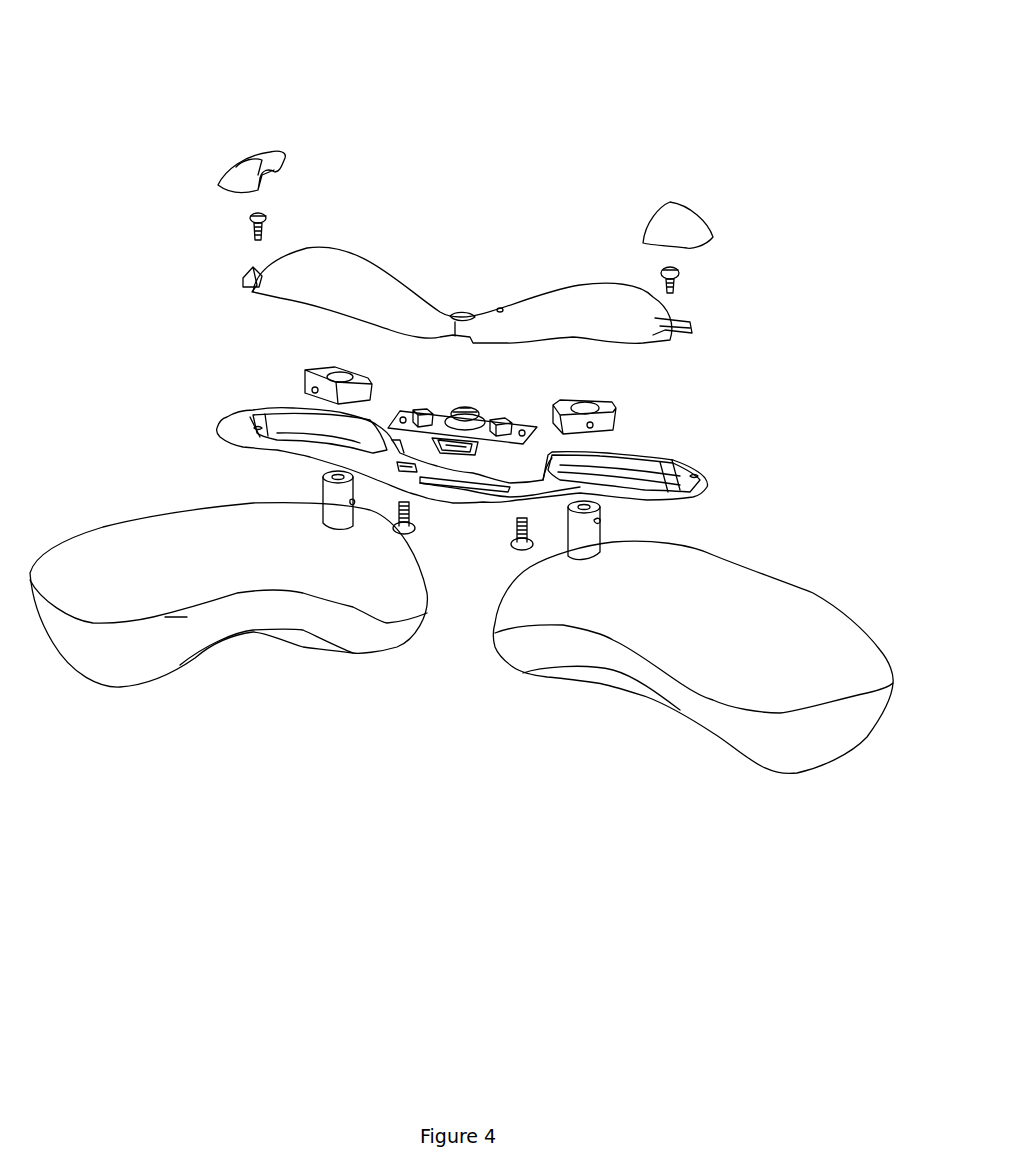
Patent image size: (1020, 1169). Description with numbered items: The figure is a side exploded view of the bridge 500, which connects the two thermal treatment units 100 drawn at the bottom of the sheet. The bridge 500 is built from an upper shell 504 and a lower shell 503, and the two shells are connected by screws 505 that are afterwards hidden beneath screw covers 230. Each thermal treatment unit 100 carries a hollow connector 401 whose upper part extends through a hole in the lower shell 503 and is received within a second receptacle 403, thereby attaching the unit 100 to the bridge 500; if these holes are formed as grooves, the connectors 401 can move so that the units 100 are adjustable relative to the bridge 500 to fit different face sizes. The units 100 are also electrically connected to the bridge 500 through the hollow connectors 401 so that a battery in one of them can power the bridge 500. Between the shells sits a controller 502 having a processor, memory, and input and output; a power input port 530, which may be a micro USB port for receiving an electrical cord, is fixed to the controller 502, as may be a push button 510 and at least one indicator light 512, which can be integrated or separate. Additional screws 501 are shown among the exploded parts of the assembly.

The thermal treatment unit 100 is at (115, 702).
The screw cover 230 is at (251, 148).
The connector 401 is at (312, 491).
The second receptacle 403 is at (300, 381).
The bridge 500 is at (500, 208).
The screw 501 is at (506, 534).
The controller 502 is at (449, 391).
The lower shell 503 is at (686, 457).
The upper shell 504 is at (404, 270).
The screw 505 is at (246, 235).
The push button 510 is at (480, 395).
The indicator light 512 is at (412, 405).
The power input port 530 is at (472, 441).